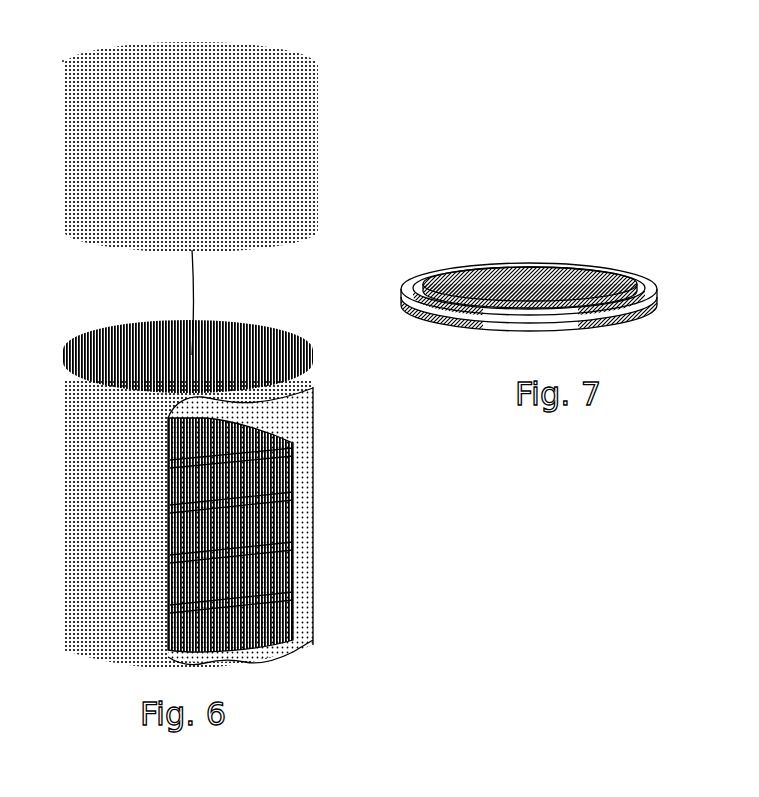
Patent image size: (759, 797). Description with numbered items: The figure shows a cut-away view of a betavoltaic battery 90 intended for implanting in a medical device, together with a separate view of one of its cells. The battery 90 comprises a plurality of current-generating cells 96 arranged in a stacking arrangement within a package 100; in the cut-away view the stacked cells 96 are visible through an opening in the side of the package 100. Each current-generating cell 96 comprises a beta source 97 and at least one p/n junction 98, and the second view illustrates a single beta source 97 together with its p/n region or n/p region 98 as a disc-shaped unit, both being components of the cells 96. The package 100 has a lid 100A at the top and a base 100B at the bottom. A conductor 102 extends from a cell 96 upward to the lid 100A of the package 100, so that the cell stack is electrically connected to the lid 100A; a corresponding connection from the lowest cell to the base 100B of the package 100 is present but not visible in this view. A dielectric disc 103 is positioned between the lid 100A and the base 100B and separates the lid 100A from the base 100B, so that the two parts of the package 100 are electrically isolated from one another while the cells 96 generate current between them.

In FIG. 6, the betavoltaic battery 90 is at (50, 85).
In FIG. 6, the current-generating cell 96 is at (284, 465).
In FIG. 7, the current-generating cell 96 is at (668, 232).
In FIG. 7, the beta source 97 is at (447, 272).
In FIG. 7, the p/n junction 98 is at (657, 303).
In FIG. 6, the package 100 is at (326, 54).
In FIG. 6, the lid 100A is at (318, 120).
In FIG. 6, the base 100B is at (62, 648).
In FIG. 6, the conductor 102 is at (190, 283).
In FIG. 6, the dielectric disc 103 is at (62, 353).